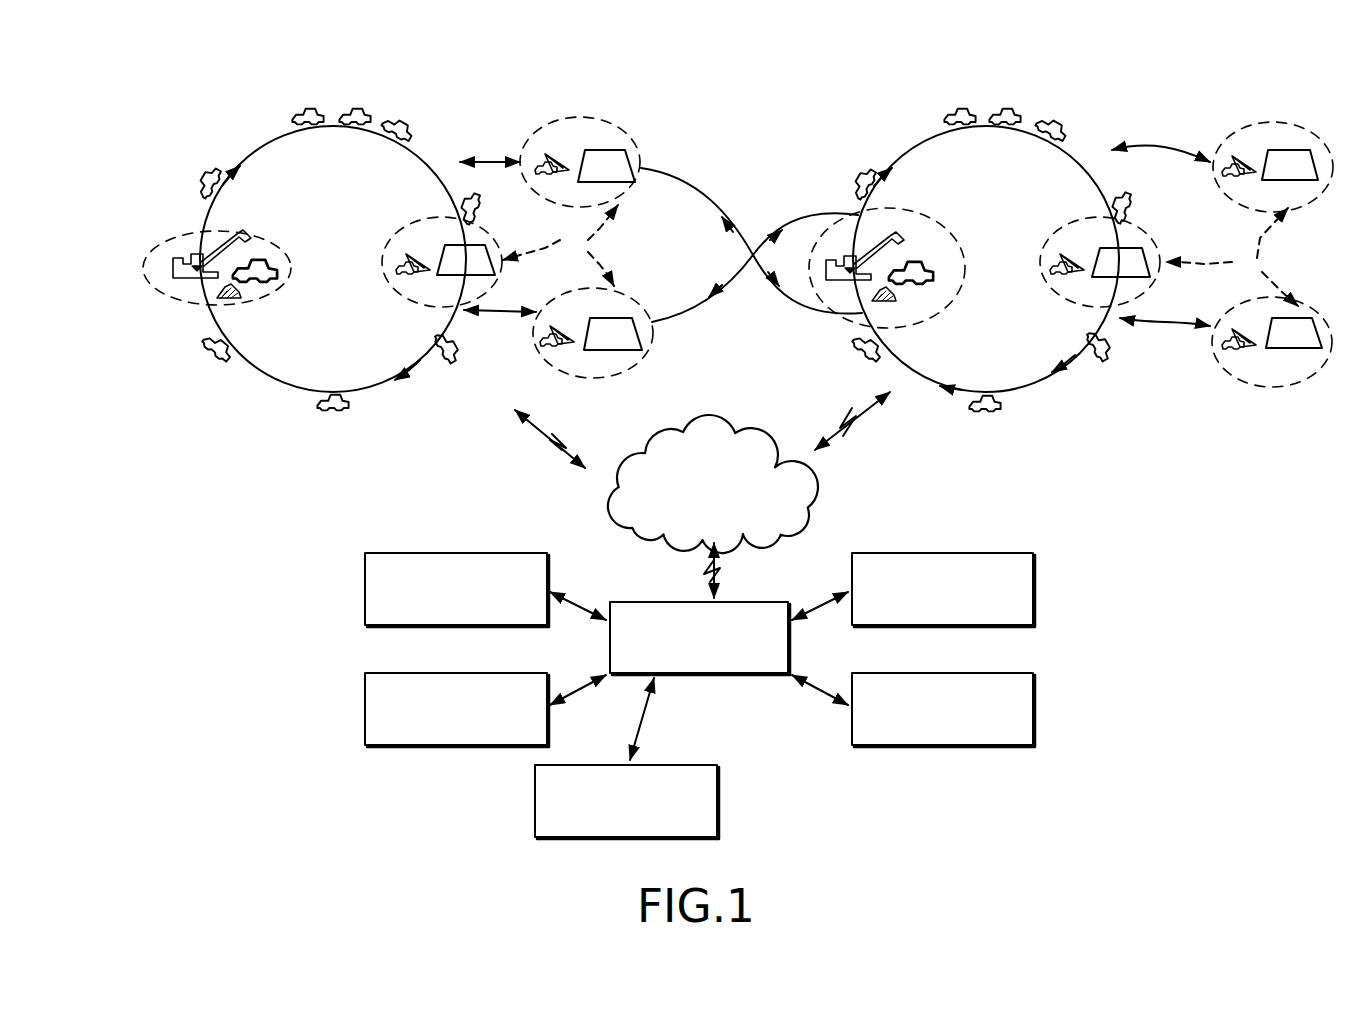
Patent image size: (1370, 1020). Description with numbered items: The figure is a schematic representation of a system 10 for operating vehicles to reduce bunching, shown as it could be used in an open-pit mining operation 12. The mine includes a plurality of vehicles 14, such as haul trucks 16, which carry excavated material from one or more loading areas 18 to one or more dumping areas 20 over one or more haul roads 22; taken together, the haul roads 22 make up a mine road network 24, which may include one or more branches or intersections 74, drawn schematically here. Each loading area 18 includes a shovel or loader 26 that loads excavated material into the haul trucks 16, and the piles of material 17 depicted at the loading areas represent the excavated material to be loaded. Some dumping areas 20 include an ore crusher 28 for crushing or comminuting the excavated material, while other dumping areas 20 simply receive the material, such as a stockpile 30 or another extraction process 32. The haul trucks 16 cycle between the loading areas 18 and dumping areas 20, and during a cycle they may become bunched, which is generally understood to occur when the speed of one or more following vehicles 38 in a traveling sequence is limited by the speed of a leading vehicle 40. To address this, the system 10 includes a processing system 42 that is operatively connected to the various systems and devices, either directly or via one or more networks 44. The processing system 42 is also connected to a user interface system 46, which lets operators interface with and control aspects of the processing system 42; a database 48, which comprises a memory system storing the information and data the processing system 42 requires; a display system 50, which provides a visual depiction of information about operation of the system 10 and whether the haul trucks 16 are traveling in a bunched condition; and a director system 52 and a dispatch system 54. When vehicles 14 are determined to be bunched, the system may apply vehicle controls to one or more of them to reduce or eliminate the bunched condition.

The system 10 is at (248, 516).
The open-pit mining operation 12 is at (675, 82).
The vehicles 14 is at (314, 404).
The haul trucks 16 is at (352, 124).
The material pile 17 is at (240, 300).
The loading areas 18 is at (240, 230).
The dumping areas 20 is at (900, 255).
The haul roads 22 is at (490, 160).
The mine road network 24 is at (236, 160).
The shovel or loader 26 is at (166, 278).
The ore crusher 28 is at (432, 240).
The stockpile 30 is at (636, 154).
The other extraction process 32 is at (620, 312).
The following vehicles 38 is at (356, 108).
The leading vehicle 40 is at (402, 124).
The processing system 42 is at (702, 676).
The network 44 is at (818, 506).
The user interface system 46 is at (364, 587).
The database 48 is at (1036, 590).
The display system 50 is at (1036, 708).
The director system 52 is at (364, 706).
The dispatch system 54 is at (720, 802).
The branches or intersections 74 is at (462, 304).